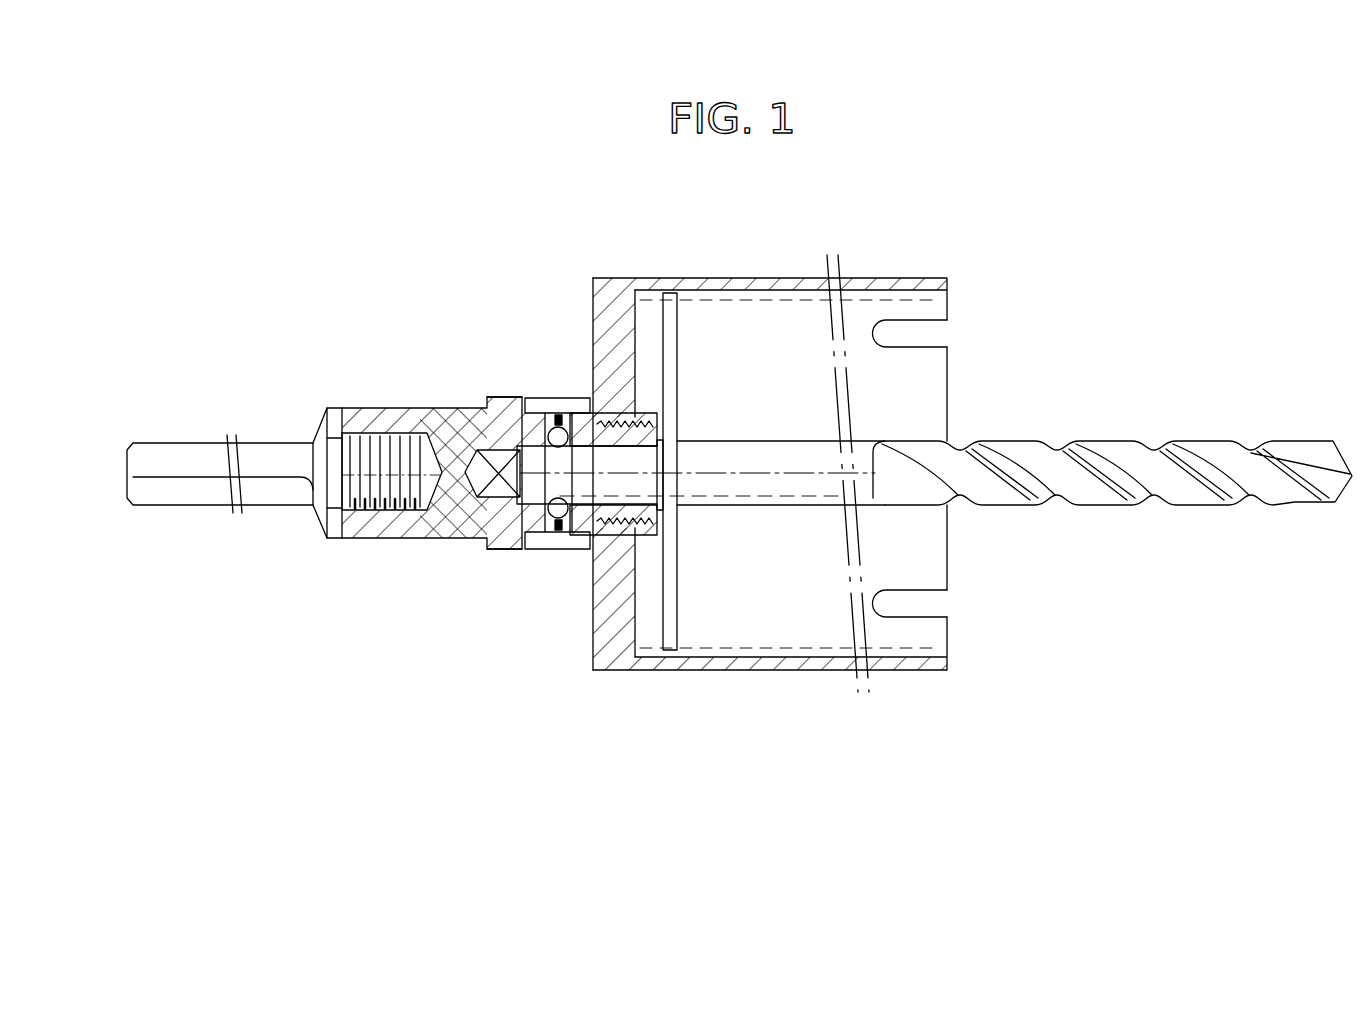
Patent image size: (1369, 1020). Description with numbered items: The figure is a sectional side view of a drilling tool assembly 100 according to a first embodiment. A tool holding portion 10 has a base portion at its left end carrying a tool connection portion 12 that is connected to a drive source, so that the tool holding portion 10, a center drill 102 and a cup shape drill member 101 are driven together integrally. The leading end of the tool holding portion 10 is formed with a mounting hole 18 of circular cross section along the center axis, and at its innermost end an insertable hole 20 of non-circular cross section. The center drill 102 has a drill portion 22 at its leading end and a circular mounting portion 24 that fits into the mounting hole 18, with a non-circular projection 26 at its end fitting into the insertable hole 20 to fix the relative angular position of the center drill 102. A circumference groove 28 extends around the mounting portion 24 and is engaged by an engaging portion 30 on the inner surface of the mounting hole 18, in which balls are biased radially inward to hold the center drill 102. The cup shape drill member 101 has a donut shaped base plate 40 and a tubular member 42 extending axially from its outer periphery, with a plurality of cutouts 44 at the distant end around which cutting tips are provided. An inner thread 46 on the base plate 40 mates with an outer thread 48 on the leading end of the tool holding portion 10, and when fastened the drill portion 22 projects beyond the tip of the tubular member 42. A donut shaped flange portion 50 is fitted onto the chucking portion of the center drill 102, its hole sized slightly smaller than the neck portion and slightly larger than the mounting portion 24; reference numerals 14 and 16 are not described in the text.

The tool holding portion 10 is at (438, 408).
The tool connection portion 12 is at (272, 443).
The pilot drill shaft 14 is at (797, 450).
The hole saw 16 is at (779, 460).
The mounting hole 18 is at (520, 415).
The insertable hole 20 is at (455, 485).
The drill portion 22 is at (1112, 477).
The mounting portion 24 is at (632, 490).
The non-circular shaped projection 26 is at (488, 500).
The circumference groove 28 is at (516, 522).
The engaging portion 30 is at (560, 389).
The base plate 40 is at (593, 317).
The tubular member 42 is at (685, 288).
The cutouts 44 is at (915, 327).
The inner thread 46 is at (585, 533).
The outer thread 48 is at (643, 426).
The flange portion 50 is at (672, 352).
The drilling tool assembly 100 is at (762, 719).
The cup shape drill member 101 is at (624, 682).
The center drill 102 is at (1091, 516).